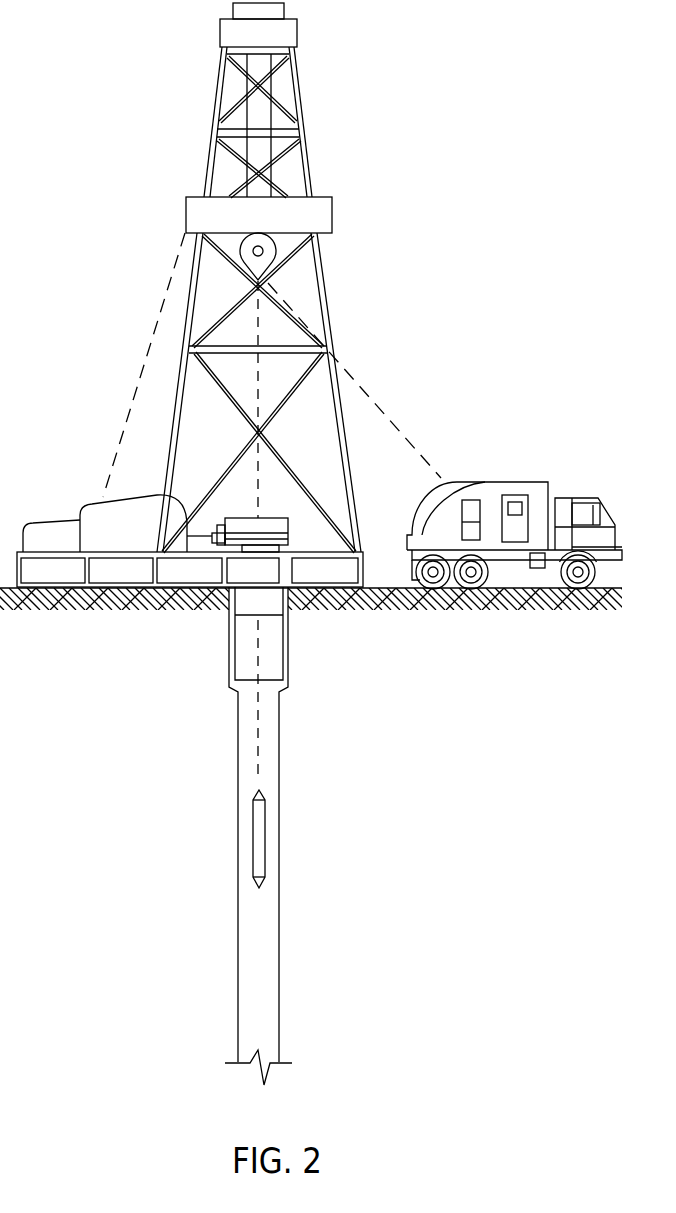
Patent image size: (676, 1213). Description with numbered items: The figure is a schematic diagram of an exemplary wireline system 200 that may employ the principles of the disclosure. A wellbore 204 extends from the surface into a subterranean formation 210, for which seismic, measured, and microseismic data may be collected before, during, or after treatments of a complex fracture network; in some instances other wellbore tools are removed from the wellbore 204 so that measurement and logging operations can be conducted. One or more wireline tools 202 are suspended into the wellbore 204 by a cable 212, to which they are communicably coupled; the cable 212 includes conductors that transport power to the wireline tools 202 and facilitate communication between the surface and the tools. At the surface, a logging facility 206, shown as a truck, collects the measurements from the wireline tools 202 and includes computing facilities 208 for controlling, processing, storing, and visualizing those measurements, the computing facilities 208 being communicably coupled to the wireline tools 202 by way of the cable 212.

The wireline system 200 is at (476, 259).
The wireline tools 202 is at (244, 818).
The wellbore 204 is at (278, 742).
The logging facility 206 is at (514, 493).
The computing facilities 208 is at (478, 500).
The subterranean formation 210 is at (479, 850).
The cable 212 is at (378, 403).